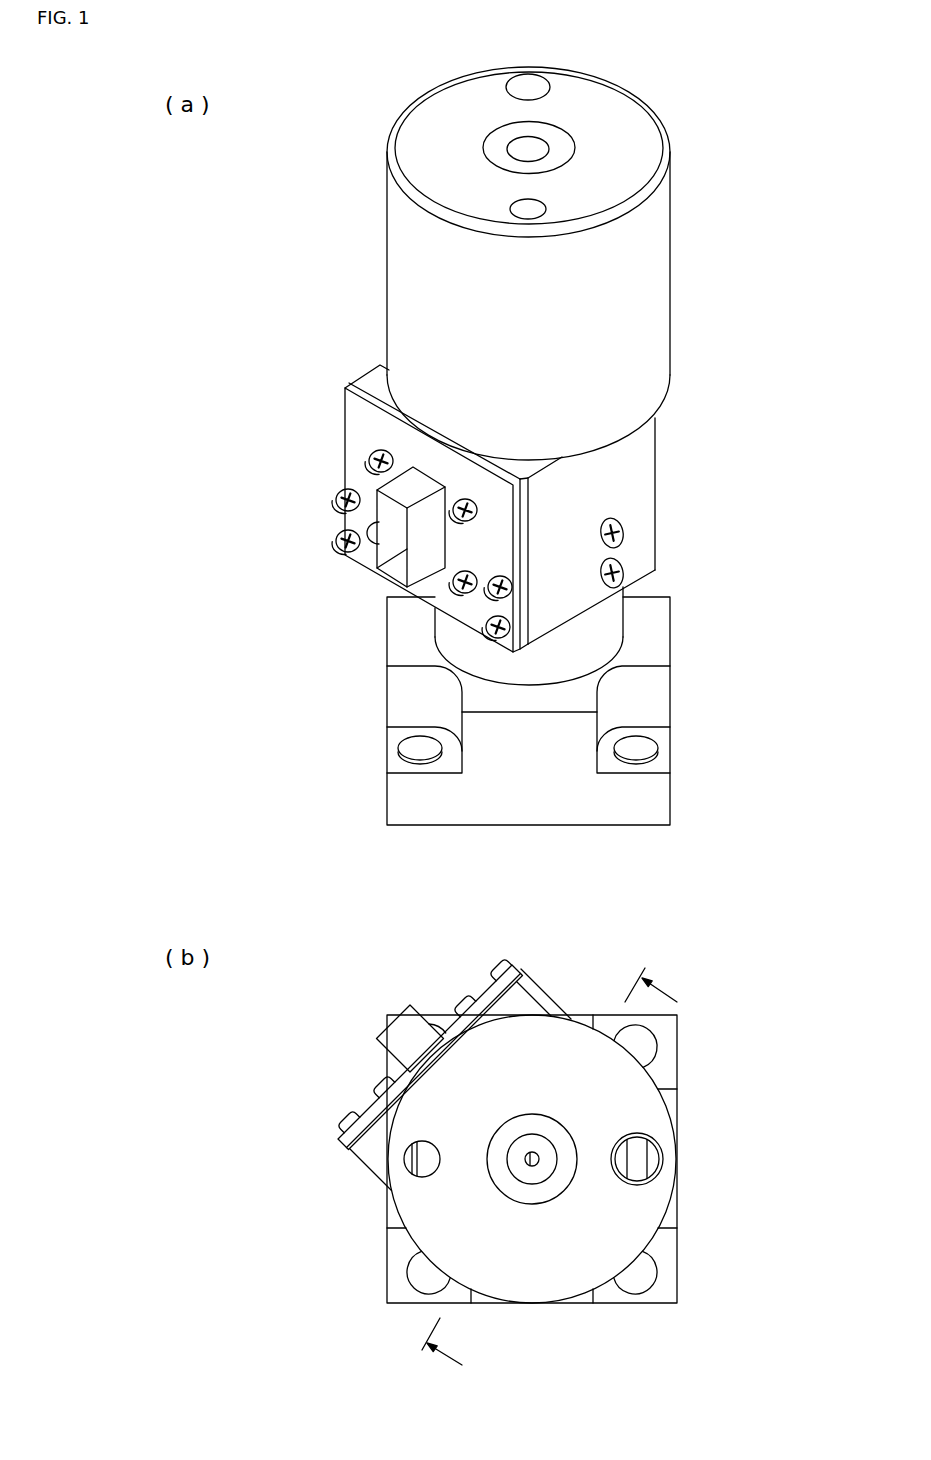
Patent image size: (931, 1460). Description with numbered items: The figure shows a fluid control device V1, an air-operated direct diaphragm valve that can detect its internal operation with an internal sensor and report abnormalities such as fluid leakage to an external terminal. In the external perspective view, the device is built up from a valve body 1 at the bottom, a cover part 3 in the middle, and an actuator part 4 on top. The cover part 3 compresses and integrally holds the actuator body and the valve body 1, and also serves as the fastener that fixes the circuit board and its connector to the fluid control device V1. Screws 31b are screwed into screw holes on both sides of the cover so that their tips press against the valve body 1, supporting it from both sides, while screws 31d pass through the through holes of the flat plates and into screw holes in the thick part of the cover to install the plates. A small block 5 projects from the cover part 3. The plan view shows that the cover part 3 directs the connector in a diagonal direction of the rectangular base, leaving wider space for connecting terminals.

The fluid control device V1 is at (752, 160).
The valve body 1 is at (670, 706).
The cover part 3 is at (655, 472).
The actuator part 4 is at (668, 293).
The connector box 5 is at (377, 491).
The screw 31b is at (623, 531).
The screws 31d is at (334, 498).